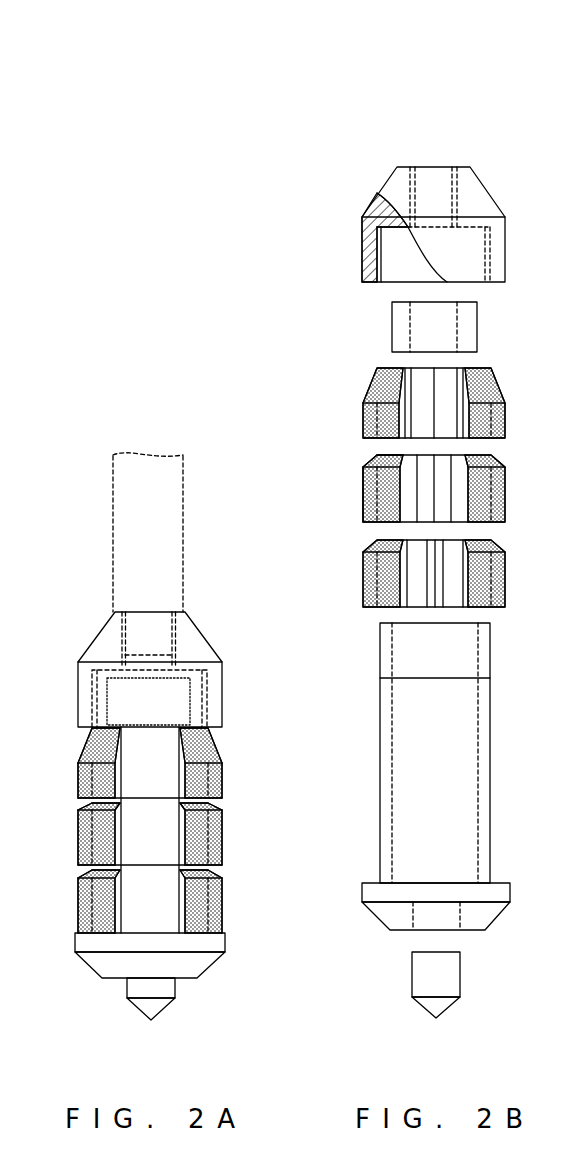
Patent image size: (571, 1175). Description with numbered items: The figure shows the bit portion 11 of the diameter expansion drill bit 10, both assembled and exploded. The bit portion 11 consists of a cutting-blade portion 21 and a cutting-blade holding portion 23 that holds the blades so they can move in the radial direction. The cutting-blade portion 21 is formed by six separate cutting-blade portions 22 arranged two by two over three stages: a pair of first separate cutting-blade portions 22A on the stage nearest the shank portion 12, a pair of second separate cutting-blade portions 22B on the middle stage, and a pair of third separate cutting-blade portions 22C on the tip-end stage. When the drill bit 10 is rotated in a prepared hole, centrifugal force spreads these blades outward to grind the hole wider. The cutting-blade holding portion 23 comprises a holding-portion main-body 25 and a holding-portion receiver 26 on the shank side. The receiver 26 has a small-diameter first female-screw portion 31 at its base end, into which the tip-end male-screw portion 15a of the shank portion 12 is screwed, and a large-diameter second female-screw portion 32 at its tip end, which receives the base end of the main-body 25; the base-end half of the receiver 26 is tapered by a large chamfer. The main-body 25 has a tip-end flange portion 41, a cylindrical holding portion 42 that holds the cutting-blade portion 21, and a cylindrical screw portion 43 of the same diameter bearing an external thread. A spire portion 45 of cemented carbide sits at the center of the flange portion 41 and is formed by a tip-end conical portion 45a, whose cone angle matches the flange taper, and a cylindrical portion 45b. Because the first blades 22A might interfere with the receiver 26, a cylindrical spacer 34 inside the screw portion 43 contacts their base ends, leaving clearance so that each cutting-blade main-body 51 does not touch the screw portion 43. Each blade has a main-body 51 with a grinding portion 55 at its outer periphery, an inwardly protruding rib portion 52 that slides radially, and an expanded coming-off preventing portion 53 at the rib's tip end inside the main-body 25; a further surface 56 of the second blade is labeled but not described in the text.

In FIG. 2A, the diameter expansion drill bit 10 is at (166, 378).
In FIG. 2B, the diameter expansion drill bit 10 is at (434, 75).
In FIG. 2A, the bit portion 11 is at (215, 590).
In FIG. 2B, the bit portion 11 is at (503, 122).
In FIG. 2A, the shank portion 12 is at (186, 496).
In FIG. 2A, the tip-end male-screw portion 15a is at (122, 633).
In FIG. 2A, the cutting-blade portion 21 is at (290, 425).
In FIG. 2B, the cutting-blade portion 21 is at (405, 495).
In FIG. 2A, the separate cutting-blade portions 22 is at (179, 836).
In FIG. 2B, the separate cutting-blade portions 22 is at (439, 495).
In FIG. 2A, the first separate cutting-blade portions 22A is at (224, 784).
In FIG. 2B, the first separate cutting-blade portions 22A is at (507, 413).
In FIG. 2A, the second separate cutting-blade portions 22B is at (224, 849).
In FIG. 2B, the second separate cutting-blade portions 22B is at (507, 498).
In FIG. 2A, the third separate cutting-blade portions 22C is at (224, 909).
In FIG. 2B, the third separate cutting-blade portions 22C is at (507, 583).
In FIG. 2A, the cutting-blade holding portion 23 is at (80, 1025).
In FIG. 2B, the cutting-blade holding portion 23 is at (360, 972).
In FIG. 2A, the holding-portion main-body 25 is at (228, 974).
In FIG. 2B, the holding-portion main-body 25 is at (509, 772).
In FIG. 2A, the holding-portion receiver 26 is at (218, 633).
In FIG. 2B, the holding-portion receiver 26 is at (501, 189).
In FIG. 2B, the first female-screw portion 31 is at (446, 166).
In FIG. 2B, the second female-screw portion 32 is at (390, 257).
In FIG. 2A, the spacer 34 is at (172, 706).
In FIG. 2B, the spacer 34 is at (480, 329).
In FIG. 2A, the tip-end flange portion 41 is at (86, 965).
In FIG. 2B, the tip-end flange portion 41 is at (375, 918).
In FIG. 2A, the cylindrical holding portion 42 is at (88, 835).
In FIG. 2B, the cylindrical holding portion 42 is at (380, 748).
In FIG. 2A, the cylindrical screw portion 43 is at (92, 700).
In FIG. 2B, the cylindrical screw portion 43 is at (380, 650).
In FIG. 2A, the spire portion 45 is at (165, 1012).
In FIG. 2B, the spire portion 45 is at (520, 962).
In FIG. 2B, the tip-end conical portion 45a is at (446, 1008).
In FIG. 2B, the cylindrical portion 45b is at (462, 977).
In FIG. 2B, the cutting-blade main-body 51 is at (370, 492).
In FIG. 2B, the rib portion 52 is at (410, 513).
In FIG. 2B, the coming-off preventing portion 53 is at (425, 515).
In FIG. 2B, the grinding portion 55 is at (365, 477).
In FIG. 2B, the tapered surface 56 is at (372, 462).